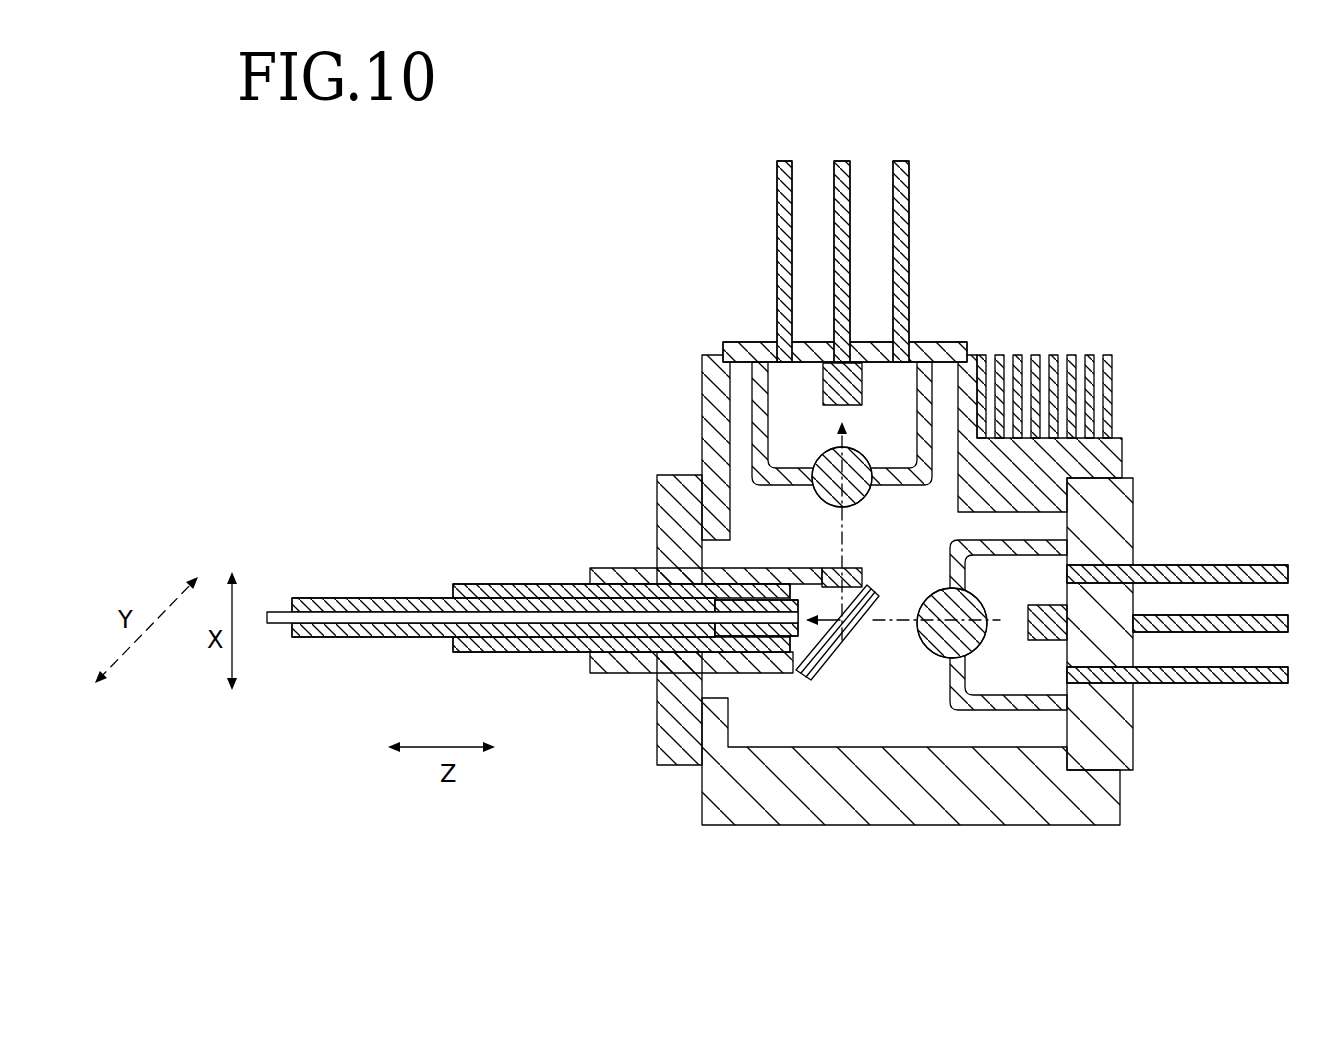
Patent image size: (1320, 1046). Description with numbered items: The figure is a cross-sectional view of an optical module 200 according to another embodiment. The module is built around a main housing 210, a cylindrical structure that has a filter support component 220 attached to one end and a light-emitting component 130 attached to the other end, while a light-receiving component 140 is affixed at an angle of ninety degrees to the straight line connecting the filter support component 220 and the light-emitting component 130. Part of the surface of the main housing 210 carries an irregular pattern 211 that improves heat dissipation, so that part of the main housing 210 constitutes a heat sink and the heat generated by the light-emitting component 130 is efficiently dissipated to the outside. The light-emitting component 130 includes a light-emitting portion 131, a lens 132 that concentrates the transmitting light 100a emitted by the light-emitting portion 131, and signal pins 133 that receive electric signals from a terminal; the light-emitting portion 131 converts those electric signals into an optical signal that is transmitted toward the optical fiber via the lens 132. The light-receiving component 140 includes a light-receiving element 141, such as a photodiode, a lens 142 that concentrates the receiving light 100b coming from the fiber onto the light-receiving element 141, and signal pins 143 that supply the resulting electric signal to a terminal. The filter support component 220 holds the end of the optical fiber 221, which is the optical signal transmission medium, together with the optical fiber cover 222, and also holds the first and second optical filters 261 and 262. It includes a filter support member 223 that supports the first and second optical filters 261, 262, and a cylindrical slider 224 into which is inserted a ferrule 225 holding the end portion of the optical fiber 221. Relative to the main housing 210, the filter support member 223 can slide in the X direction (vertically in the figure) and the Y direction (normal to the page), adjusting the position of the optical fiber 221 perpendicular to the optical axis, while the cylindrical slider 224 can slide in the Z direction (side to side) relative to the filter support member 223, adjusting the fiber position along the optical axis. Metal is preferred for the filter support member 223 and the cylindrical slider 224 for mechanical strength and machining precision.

The transmitting light 100a is at (816, 676).
The receiving light 100b is at (843, 532).
The light-emitting component 130 is at (1152, 722).
The light-emitting portion 131 is at (1028, 608).
The lens 132 is at (977, 648).
The signal pins 133 is at (1242, 667).
The light-receiving component 140 is at (941, 287).
The light-receiving element 141 is at (863, 383).
The lens 142 is at (878, 446).
The signal pins 143 is at (903, 160).
The optical module 200 is at (1128, 108).
The main housing 210 is at (702, 398).
The irregular pattern 211 is at (1047, 350).
The filter support component 220 is at (638, 492).
The optical fiber 221 is at (278, 625).
The optical fiber cover 222 is at (397, 638).
The filter support member 223 is at (657, 752).
The cylindrical slider 224 is at (495, 653).
The ferrule 225 is at (790, 663).
The first optical filter 261 is at (813, 680).
The second optical filter 262 is at (856, 568).